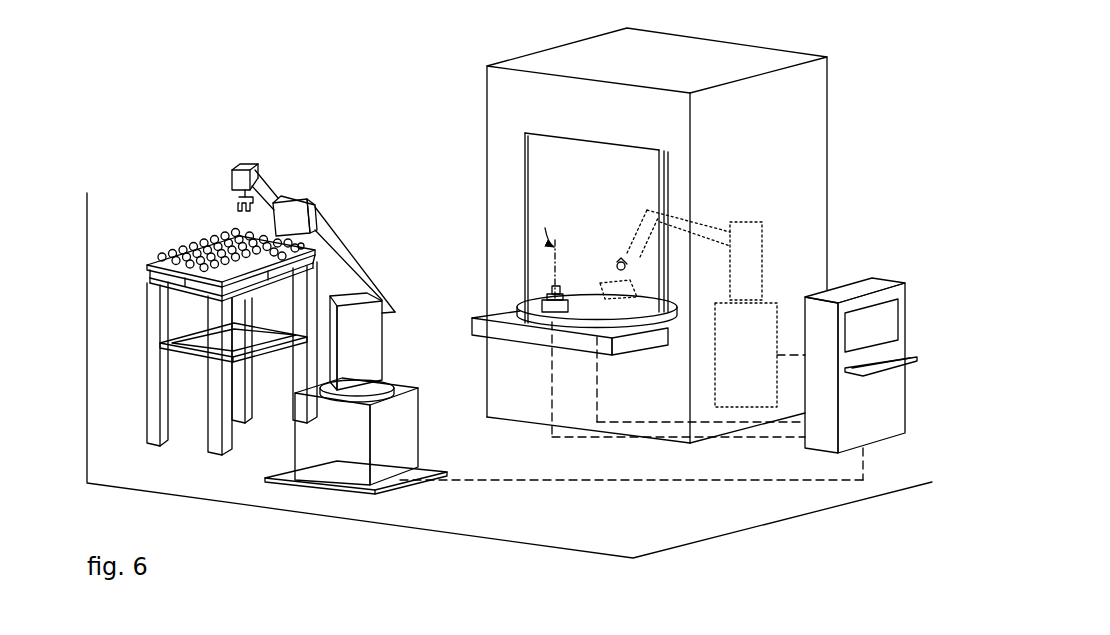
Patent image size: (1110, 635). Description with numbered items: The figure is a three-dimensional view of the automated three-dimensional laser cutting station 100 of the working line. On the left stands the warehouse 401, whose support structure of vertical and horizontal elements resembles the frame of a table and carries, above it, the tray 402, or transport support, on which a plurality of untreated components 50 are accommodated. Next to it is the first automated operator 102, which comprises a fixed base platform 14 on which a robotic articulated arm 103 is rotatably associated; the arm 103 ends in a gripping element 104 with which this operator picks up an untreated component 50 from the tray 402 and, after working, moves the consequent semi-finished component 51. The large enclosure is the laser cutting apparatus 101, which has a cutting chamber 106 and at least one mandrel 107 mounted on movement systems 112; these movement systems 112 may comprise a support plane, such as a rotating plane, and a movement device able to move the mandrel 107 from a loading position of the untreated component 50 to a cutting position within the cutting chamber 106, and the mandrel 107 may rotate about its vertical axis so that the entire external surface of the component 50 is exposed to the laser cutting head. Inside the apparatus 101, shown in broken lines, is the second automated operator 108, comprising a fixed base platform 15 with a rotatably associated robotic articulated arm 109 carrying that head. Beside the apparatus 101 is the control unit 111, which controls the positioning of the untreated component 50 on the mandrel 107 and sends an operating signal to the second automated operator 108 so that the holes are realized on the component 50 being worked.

The automated three-dimensional laser cutting station 100 is at (878, 141).
The laser cutting apparatus 101 is at (484, 85).
The first automated operator 102 is at (321, 189).
The robotic articulated arm 103 is at (279, 186).
The gripper 104 is at (242, 168).
The cutting chamber 106 is at (596, 52).
The mandrel 107 is at (546, 305).
The second automated operator 108 is at (778, 250).
The robotic articulated arm 109 is at (709, 232).
The control unit 111 is at (883, 424).
The movement systems 112 is at (572, 322).
The fixed base platform 14 is at (332, 456).
The fixed base platform 15 is at (739, 388).
The untreated component 50 is at (205, 249).
The semi-finished component 51 is at (303, 247).
The warehouse 401 is at (156, 371).
The tray 402 is at (148, 265).